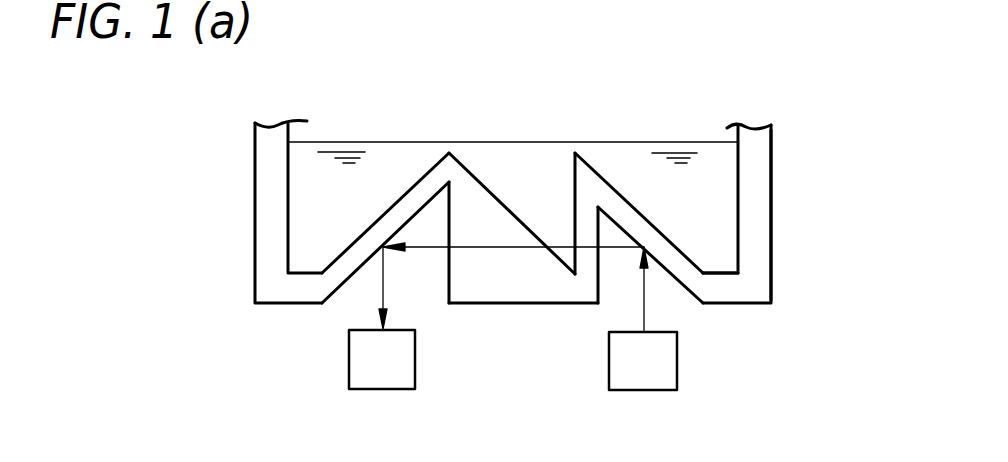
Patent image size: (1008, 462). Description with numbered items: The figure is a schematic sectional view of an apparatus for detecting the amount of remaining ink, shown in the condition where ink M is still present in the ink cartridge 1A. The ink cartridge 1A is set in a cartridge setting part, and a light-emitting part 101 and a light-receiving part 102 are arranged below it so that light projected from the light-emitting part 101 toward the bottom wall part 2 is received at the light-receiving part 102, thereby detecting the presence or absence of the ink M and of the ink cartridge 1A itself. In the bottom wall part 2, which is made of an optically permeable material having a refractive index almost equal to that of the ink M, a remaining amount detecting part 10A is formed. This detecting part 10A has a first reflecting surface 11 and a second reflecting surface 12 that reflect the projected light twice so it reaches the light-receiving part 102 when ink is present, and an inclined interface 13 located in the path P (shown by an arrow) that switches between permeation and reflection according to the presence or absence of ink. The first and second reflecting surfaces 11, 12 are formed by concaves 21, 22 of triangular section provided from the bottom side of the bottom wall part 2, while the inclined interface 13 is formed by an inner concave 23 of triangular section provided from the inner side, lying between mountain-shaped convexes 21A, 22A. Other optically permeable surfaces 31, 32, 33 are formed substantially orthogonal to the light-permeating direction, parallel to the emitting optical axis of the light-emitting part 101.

The ink cartridge 1A is at (778, 150).
The bottom wall part 2 is at (737, 290).
The ink M is at (683, 142).
The remaining amount detecting part 10A is at (685, 241).
The first reflecting surface 11 is at (677, 284).
The second reflecting surface 12 is at (357, 277).
The inclined interface 13 is at (480, 178).
The concave 21 is at (616, 277).
The convex 21A is at (611, 186).
The concave 22 is at (427, 276).
The convex 22A is at (411, 185).
The concave 23 is at (518, 195).
The optically permeable surface 31 is at (599, 284).
The optically permeable surface 32 is at (450, 276).
The optically permeable surface 33 is at (573, 200).
The path P is at (492, 249).
The light-emitting part 101 is at (643, 393).
The light-receiving part 102 is at (383, 392).